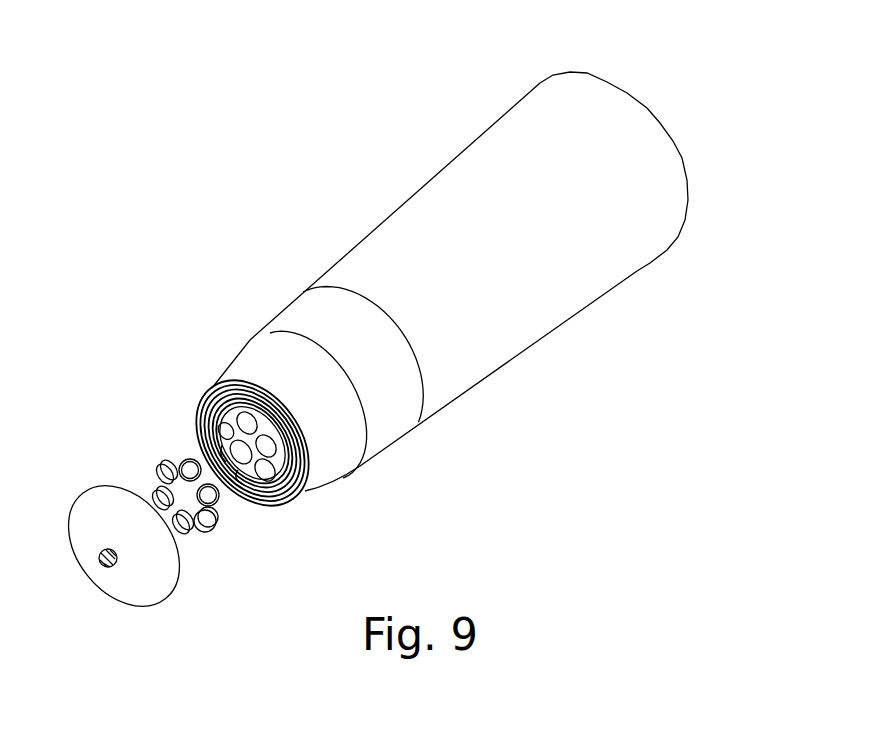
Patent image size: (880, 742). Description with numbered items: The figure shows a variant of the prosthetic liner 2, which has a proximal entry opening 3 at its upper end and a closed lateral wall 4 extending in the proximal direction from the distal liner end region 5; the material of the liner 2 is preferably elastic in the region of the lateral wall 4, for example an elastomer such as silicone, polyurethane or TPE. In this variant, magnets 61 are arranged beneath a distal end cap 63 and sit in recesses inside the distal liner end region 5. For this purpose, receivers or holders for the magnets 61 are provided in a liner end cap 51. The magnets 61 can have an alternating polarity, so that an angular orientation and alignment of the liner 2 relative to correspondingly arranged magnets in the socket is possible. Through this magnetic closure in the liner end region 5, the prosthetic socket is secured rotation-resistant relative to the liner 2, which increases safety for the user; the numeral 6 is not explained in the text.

The prosthetic liner 2 is at (462, 333).
The proximal entry opening 3 is at (683, 157).
The lateral wall 4 is at (538, 305).
The distal liner end region 5 is at (252, 476).
The liner end cap 51 is at (282, 500).
The closure assembly 6 is at (148, 571).
The magnets 61 is at (210, 535).
The distal end cap 63 is at (142, 587).